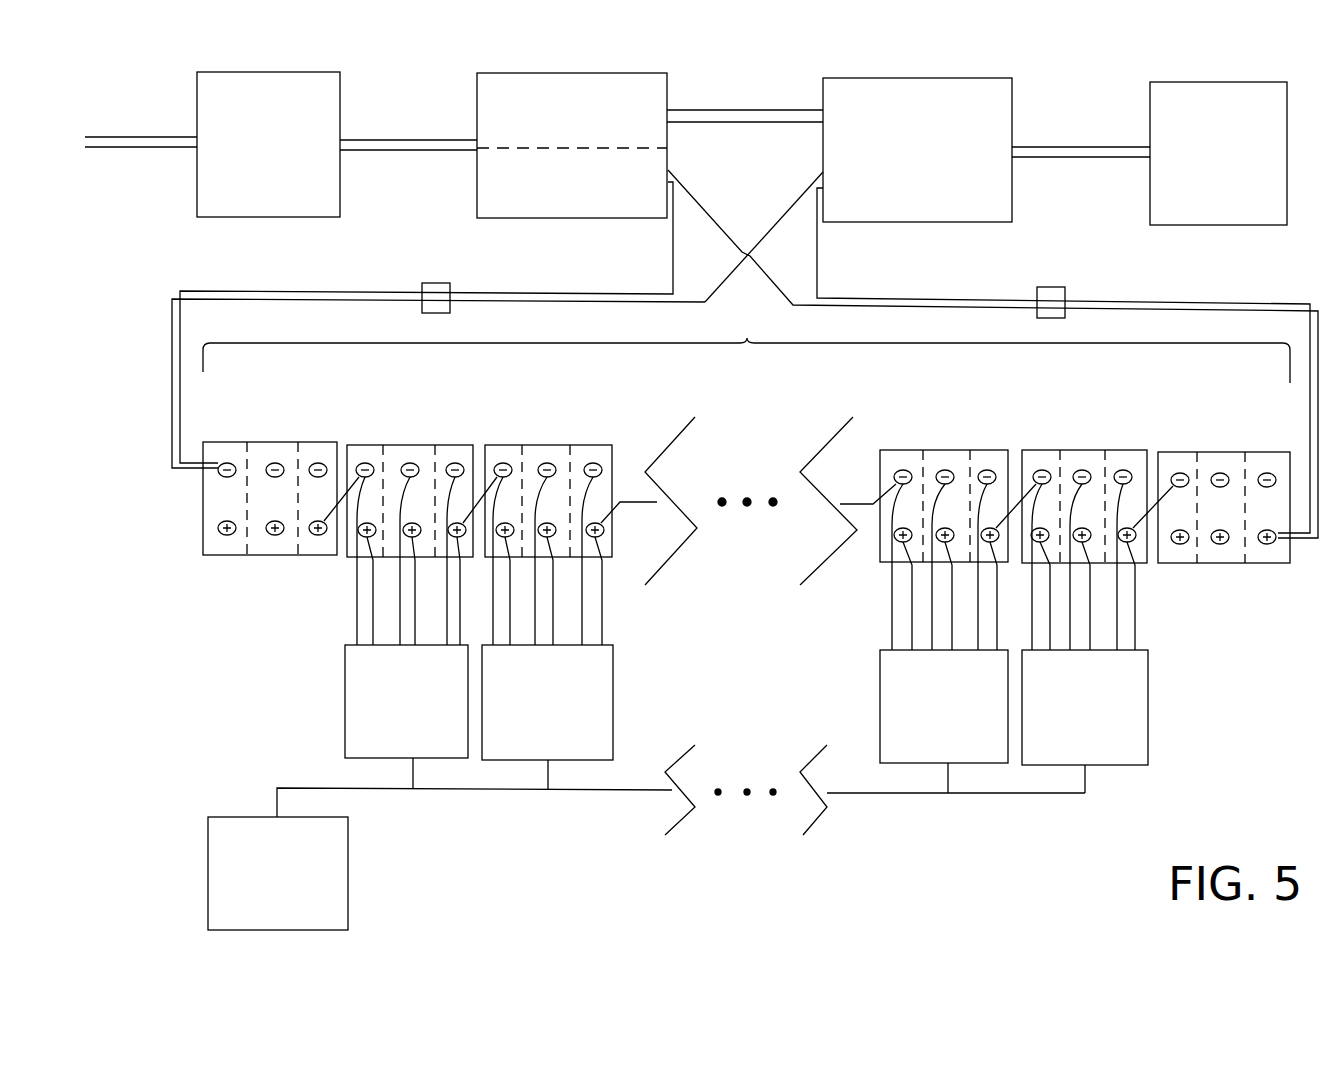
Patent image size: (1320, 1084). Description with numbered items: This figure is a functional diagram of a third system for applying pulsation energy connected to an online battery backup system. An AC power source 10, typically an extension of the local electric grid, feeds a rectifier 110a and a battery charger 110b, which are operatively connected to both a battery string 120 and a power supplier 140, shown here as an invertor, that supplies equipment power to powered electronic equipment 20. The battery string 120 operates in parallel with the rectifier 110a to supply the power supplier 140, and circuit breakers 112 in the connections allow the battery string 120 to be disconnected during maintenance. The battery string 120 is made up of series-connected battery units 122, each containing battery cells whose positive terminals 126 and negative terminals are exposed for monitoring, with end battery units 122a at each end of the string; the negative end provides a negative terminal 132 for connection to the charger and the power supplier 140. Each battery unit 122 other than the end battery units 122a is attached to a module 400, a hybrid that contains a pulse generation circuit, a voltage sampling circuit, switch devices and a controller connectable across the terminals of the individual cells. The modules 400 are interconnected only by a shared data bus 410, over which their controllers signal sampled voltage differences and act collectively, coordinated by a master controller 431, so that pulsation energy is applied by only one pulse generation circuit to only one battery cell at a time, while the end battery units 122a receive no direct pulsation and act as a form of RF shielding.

The AC power source 10 is at (210, 144).
The rectifier 110a is at (572, 145).
The battery charger 110b is at (572, 169).
The power supplier 140 is at (917, 150).
The powered electronic equipment 20 is at (1218, 153).
The circuit breaker 112 is at (450, 262).
The battery string 120 is at (745, 354).
The end battery unit 122a is at (208, 418).
The battery unit 122 is at (473, 418).
The negative terminal 132 is at (220, 478).
The positive terminal 126 is at (298, 578).
The module 400 is at (746, 621).
The shared data bus 410 is at (393, 790).
The master controller 431 is at (278, 873).